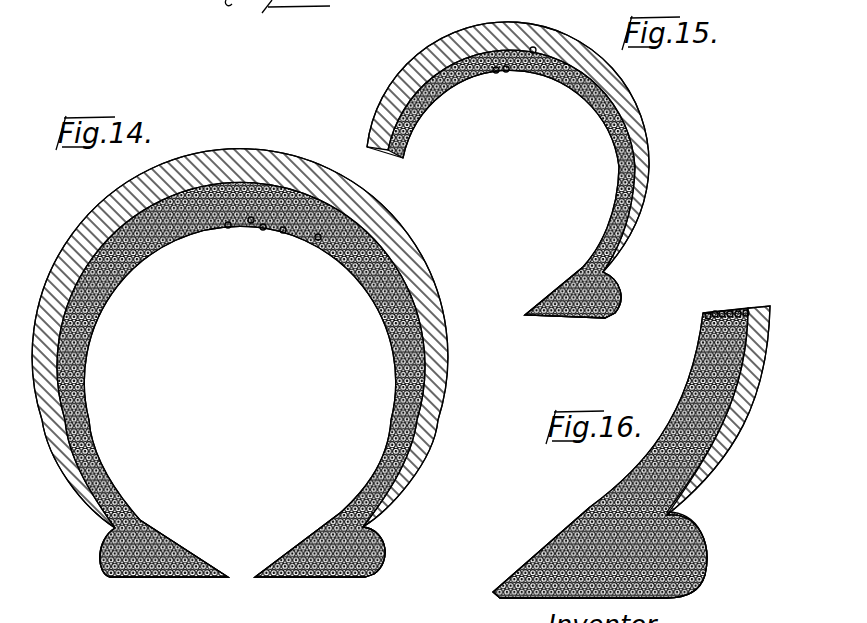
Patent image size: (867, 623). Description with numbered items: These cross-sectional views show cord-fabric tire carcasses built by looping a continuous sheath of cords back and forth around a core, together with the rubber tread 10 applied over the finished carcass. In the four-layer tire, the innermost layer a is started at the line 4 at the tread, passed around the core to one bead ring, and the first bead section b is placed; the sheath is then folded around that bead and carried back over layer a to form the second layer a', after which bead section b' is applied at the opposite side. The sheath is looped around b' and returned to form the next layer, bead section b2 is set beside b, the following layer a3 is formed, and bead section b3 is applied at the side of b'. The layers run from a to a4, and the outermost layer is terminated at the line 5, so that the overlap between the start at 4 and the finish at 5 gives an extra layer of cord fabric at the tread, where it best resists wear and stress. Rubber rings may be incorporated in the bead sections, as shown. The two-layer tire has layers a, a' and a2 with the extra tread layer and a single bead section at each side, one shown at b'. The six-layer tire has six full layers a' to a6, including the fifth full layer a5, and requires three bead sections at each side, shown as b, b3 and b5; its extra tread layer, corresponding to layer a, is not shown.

In FIG. 14, the tread 10 is at (287, 166).
In FIG. 15, the tread 10 is at (560, 45).
In FIG. 16, the tread 10 is at (648, 452).
In FIG. 14, the terminating line 5 is at (63, 280).
In FIG. 15, the terminating line 5 is at (392, 128).
In FIG. 14, the starting line 4 is at (380, 312).
In FIG. 15, the starting line 4 is at (608, 125).
In FIG. 14, the innermost layer a is at (239, 244).
In FIG. 15, the innermost layer a is at (480, 106).
In FIG. 14, the second layer a' is at (210, 246).
In FIG. 15, the second layer a' is at (504, 97).
In FIG. 16, the second layer a' is at (693, 303).
In FIG. 14, the third layer a2 is at (262, 230).
In FIG. 16, the third layer a2 is at (715, 310).
In FIG. 14, the fourth layer a3 is at (283, 233).
In FIG. 15, the fourth layer a3 is at (533, 53).
In FIG. 16, the fourth layer a3 is at (723, 310).
In FIG. 16, the fifth layer a4 is at (732, 310).
In FIG. 14, the fifth full layer a5 is at (317, 240).
In FIG. 16, the fifth full layer a5 is at (740, 310).
In FIG. 16, the sixth layer a6 is at (750, 308).
In FIG. 14, the first bead section b is at (164, 535).
In FIG. 14, the second bead section b' is at (333, 531).
In FIG. 15, the second bead section b' is at (572, 278).
In FIG. 16, the second bead section b' is at (610, 537).
In FIG. 14, the third bead section b2 is at (117, 536).
In FIG. 14, the fourth bead section b3 is at (363, 528).
In FIG. 16, the fourth bead section b3 is at (610, 523).
In FIG. 16, the sixth bead section b5 is at (680, 525).